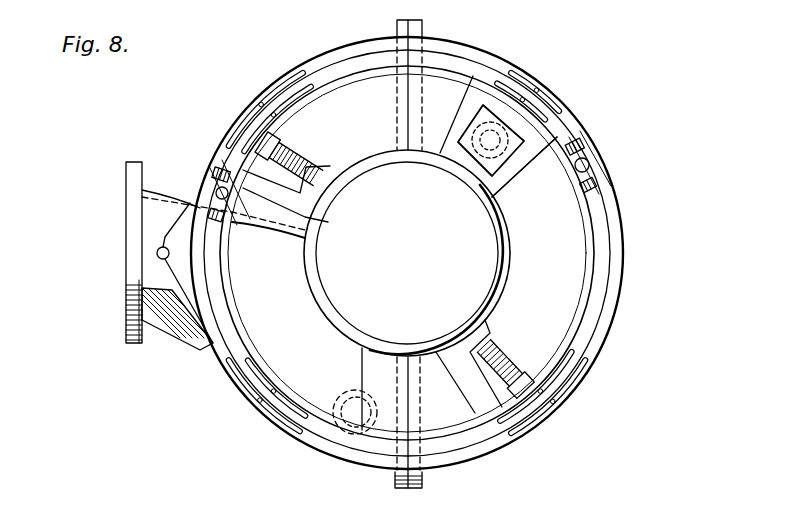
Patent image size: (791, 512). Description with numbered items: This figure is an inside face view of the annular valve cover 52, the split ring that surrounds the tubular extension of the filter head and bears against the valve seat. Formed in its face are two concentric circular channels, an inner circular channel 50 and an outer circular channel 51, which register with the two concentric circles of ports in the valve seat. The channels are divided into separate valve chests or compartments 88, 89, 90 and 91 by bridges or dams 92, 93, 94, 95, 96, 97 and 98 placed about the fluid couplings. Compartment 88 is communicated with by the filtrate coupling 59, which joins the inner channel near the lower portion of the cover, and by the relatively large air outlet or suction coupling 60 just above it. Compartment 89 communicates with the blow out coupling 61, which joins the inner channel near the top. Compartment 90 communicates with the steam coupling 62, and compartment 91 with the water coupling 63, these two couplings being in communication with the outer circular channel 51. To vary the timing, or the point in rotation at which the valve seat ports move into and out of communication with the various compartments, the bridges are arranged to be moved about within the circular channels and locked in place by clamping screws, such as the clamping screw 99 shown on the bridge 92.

The inner circular channel 50 is at (612, 318).
The outer circular channel 51 is at (603, 262).
The annular valve cover 52 is at (500, 58).
The filtrate coupling 59 is at (345, 395).
The air outlet or suction coupling 60 is at (126, 247).
The blow out coupling 61 is at (537, 151).
The steam coupling 62 is at (222, 205).
The water coupling 63 is at (592, 166).
The valve chest or compartment 88 is at (538, 470).
The valve chest or compartment 89 is at (497, 113).
The valve chest or compartment 90 is at (216, 177).
The valve chest or compartment 91 is at (590, 152).
The bridge or dam 92 is at (450, 352).
The bridge or dam 93 is at (302, 207).
The bridge or dam 94 is at (503, 177).
The bridge or dam 95 is at (232, 222).
The bridge or dam 96 is at (237, 150).
The bridge or dam 97 is at (583, 148).
The bridge or dam 98 is at (597, 181).
The clamping screw 99 is at (508, 362).